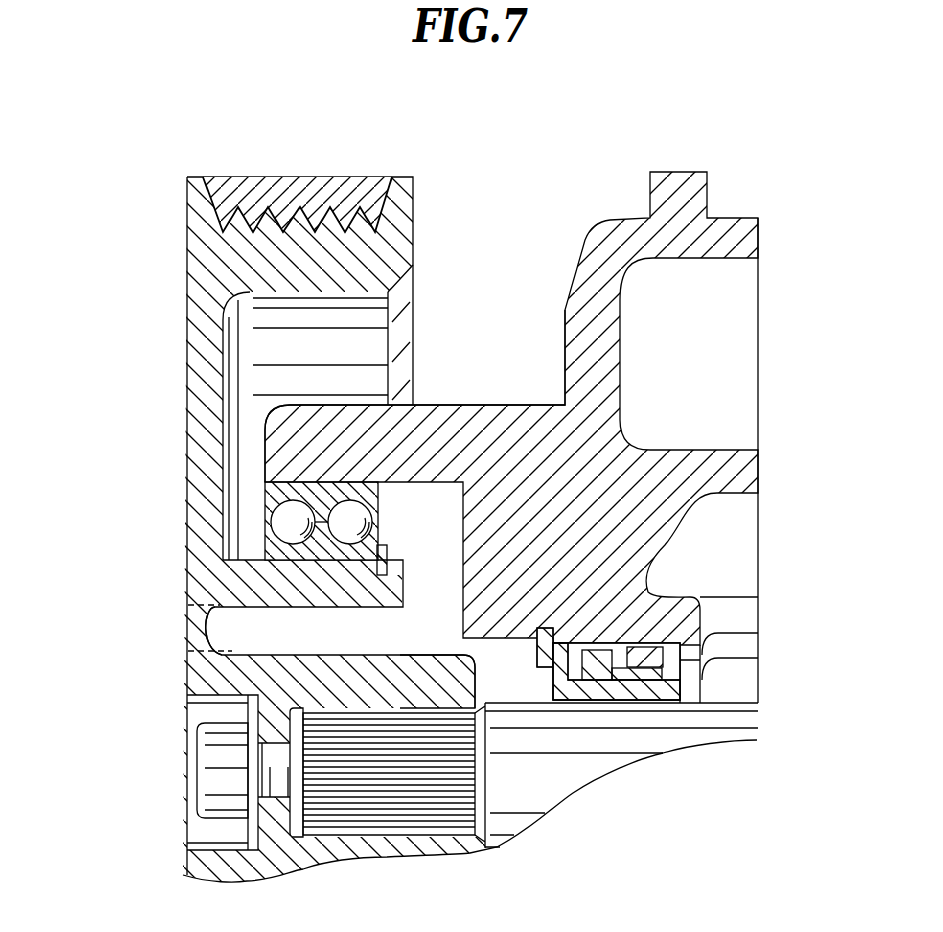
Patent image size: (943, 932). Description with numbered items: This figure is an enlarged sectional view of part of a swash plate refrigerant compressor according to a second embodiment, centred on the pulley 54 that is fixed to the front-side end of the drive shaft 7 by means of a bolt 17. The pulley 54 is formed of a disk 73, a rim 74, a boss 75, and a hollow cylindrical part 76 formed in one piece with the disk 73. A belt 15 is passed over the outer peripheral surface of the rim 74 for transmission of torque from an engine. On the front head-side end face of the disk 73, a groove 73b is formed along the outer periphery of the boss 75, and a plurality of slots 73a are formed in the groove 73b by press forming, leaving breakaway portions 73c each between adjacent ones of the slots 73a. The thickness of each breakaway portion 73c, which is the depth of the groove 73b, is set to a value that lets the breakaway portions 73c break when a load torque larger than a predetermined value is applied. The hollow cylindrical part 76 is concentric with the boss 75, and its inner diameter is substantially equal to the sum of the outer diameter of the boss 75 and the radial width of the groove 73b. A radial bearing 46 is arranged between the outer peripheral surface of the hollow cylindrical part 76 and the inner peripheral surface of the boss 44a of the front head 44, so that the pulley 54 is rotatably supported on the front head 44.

The pulley 54 is at (176, 181).
The belt 15 is at (292, 180).
The rim 74 is at (413, 218).
The disk 73 is at (195, 374).
The slots 73a is at (186, 645).
The groove 73b is at (207, 614).
The breakaway portions 73c is at (188, 625).
The radial bearing 46 is at (270, 520).
The hollow cylindrical part 76 is at (395, 595).
The boss 75 is at (450, 680).
The bolt 17 is at (207, 765).
The drive shaft 7 is at (575, 748).
The front head 44 is at (740, 218).
The boss 44a is at (448, 405).